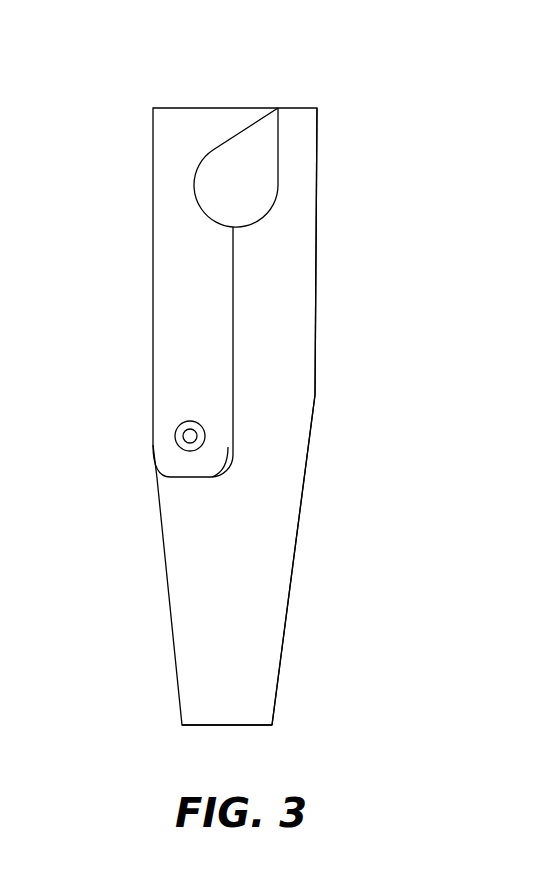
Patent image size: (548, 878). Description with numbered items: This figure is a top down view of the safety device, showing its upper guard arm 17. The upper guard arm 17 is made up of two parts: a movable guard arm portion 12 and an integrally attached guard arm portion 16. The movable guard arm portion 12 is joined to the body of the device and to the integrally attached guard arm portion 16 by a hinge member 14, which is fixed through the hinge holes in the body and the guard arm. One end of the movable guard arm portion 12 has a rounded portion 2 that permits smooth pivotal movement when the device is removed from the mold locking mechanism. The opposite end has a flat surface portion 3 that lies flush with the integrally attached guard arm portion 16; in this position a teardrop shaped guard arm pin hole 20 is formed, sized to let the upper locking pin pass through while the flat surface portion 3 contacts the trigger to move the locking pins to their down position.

The flat surface portion 3 is at (198, 123).
The movable guard arm portion 12 is at (162, 283).
The guard arm pin hole 20 is at (242, 190).
The upper guard arm 17 is at (372, 240).
The integrally attached guard arm portion 16 is at (283, 405).
The hinge member 14 is at (176, 444).
The rounded portion 2 is at (210, 477).